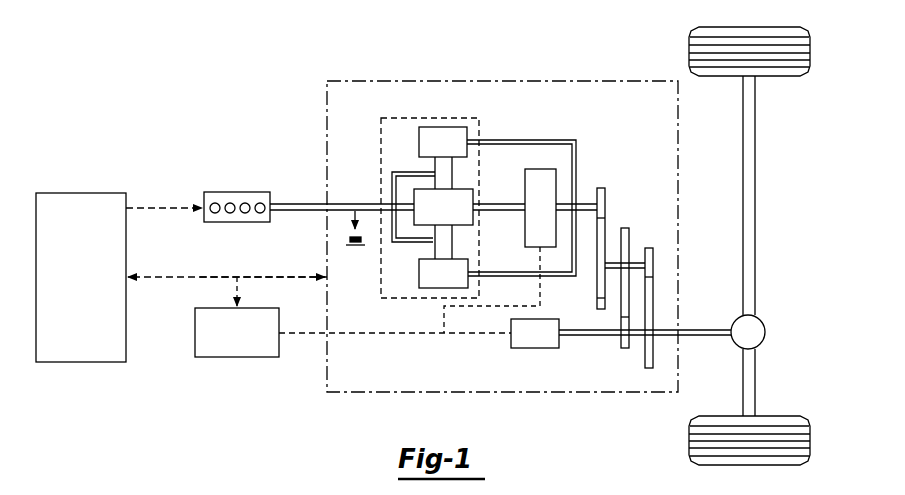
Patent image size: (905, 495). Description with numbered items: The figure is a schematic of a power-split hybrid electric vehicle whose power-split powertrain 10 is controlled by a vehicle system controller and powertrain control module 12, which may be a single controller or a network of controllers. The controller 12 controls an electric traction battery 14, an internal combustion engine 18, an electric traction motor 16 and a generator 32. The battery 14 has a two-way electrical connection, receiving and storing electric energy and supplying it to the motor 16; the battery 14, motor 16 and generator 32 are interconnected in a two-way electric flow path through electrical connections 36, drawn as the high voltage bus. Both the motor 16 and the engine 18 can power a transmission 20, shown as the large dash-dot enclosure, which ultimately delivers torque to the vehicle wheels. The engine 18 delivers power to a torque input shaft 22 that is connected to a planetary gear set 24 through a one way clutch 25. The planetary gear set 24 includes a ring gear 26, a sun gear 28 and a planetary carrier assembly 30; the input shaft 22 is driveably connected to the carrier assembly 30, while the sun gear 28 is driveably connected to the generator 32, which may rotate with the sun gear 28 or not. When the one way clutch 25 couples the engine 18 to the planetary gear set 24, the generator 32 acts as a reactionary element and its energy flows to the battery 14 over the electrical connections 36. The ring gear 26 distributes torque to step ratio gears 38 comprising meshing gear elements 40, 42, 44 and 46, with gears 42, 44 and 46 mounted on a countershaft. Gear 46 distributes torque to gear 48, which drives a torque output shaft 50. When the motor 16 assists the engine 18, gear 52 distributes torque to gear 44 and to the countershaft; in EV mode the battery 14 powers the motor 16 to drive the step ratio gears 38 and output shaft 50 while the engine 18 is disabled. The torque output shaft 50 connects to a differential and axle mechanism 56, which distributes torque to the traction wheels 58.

The power-split powertrain 10 is at (139, 62).
The vehicle system controller and powertrain control module 12 is at (80, 193).
The electric traction battery 14 is at (237, 358).
The electric traction motor 16 is at (533, 349).
The internal combustion engine 18 is at (237, 223).
The transmission 20 is at (340, 80).
The torque input shaft 22 is at (300, 203).
The planetary gear set 24 is at (387, 117).
The one way clutch 25 is at (356, 267).
The ring gear 26 is at (419, 143).
The sun gear 28 is at (414, 207).
The planetary carrier assembly 30 is at (411, 172).
The generator 32 is at (525, 186).
The electrical connections 36 is at (347, 336).
The step ratio gears 38 is at (644, 181).
The gear element 40 is at (605, 200).
The gear element 42 is at (597, 298).
The gear element 44 is at (629, 237).
The gear element 46 is at (653, 262).
The gear 48 is at (653, 362).
The torque output shaft 50 is at (708, 329).
The gear 52 is at (625, 349).
The differential and axle mechanism 56 is at (765, 332).
The traction wheels 58 is at (689, 51).